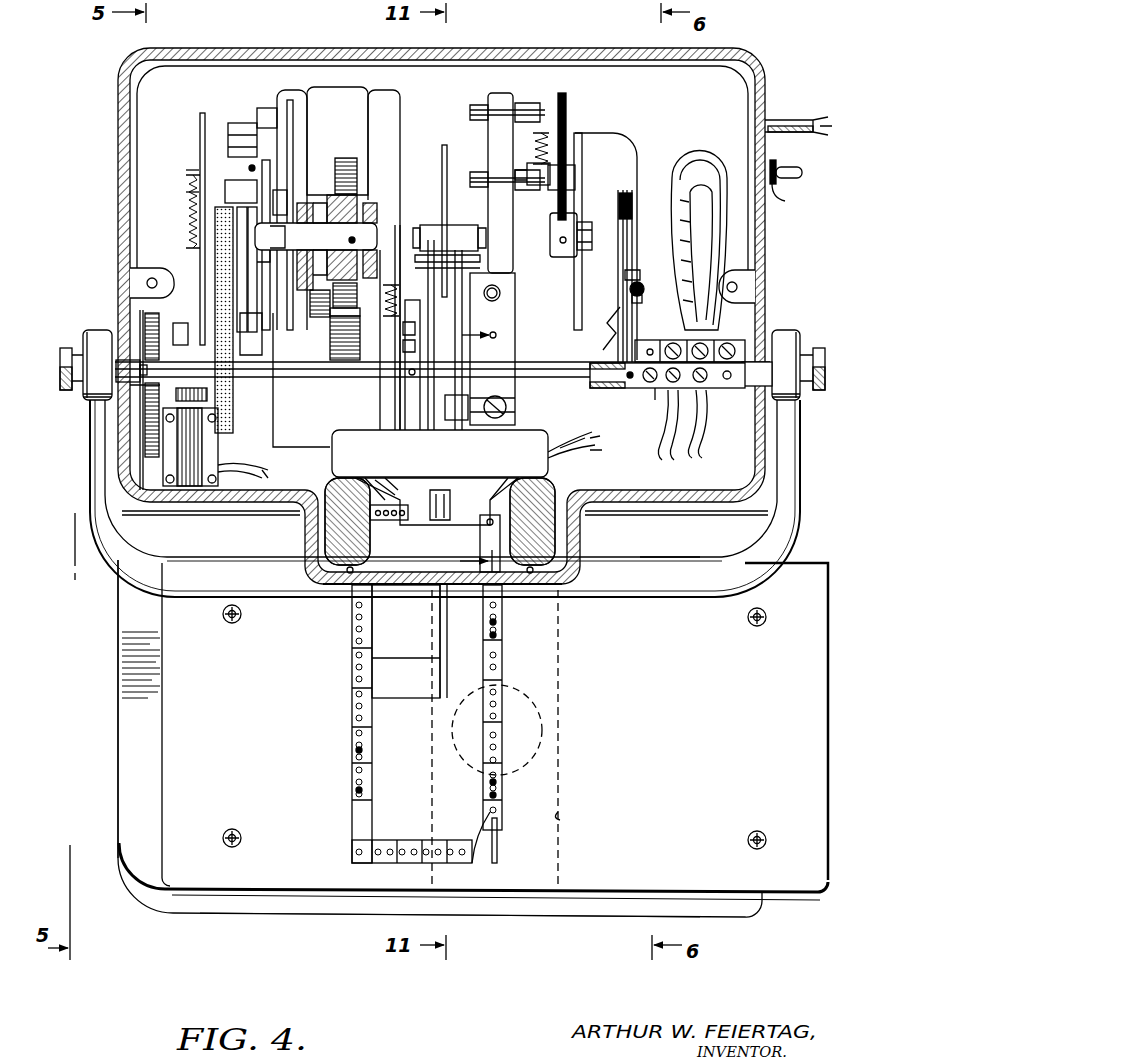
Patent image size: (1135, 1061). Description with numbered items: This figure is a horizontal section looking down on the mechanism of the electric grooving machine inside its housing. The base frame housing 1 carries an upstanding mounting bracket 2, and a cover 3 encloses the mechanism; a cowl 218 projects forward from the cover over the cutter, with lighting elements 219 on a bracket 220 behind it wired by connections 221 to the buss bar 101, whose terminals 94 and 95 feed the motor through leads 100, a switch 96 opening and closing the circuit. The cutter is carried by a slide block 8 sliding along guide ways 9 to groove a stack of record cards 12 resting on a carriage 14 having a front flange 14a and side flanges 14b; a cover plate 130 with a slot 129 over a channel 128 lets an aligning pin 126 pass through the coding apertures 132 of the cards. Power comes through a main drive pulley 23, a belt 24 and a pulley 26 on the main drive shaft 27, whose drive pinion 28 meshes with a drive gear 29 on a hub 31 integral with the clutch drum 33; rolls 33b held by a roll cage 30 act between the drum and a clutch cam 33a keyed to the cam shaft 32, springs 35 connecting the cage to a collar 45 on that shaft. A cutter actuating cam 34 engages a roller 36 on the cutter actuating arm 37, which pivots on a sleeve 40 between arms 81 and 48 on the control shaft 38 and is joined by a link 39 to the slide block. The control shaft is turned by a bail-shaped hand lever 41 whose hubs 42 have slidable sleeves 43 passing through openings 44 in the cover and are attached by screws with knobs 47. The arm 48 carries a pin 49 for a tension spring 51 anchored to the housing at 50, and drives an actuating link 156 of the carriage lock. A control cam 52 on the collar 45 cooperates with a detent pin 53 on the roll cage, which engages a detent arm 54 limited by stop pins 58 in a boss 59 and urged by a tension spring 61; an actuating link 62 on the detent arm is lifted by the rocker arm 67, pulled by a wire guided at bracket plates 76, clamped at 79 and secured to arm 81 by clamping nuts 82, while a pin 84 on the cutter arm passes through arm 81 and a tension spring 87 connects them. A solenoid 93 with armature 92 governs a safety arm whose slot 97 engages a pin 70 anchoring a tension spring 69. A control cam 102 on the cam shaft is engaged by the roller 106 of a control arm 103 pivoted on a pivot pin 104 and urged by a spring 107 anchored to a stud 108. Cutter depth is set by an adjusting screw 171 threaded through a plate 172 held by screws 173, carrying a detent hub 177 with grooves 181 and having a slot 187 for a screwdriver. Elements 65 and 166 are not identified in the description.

The base frame housing 1 is at (118, 668).
The mounting bracket 2 is at (500, 95).
The cover 3 is at (118, 162).
The slide block 8 is at (470, 492).
The guide ways 9 is at (392, 482).
The record cards 12 is at (350, 818).
The carriage 14 is at (205, 890).
The front flange 14a is at (296, 900).
The side flanges 14b is at (160, 802).
The main drive pulley 23 is at (215, 222).
The belt 24 is at (262, 255).
The pulley 26 is at (215, 305).
The main drive shaft 27 is at (330, 335).
The drive pinion 28 is at (345, 376).
The drive gear 29 is at (340, 158).
The roll cage 30 is at (275, 195).
The hub 31 is at (350, 206).
The cam shaft 32 is at (316, 236).
The clutch drum 33 is at (305, 203).
The clutch cam 33a is at (322, 203).
The rolls 33b is at (333, 300).
The cutter actuating cam 34 is at (442, 163).
The springs 35 is at (290, 239).
The roller 36 is at (437, 226).
The cutter actuating arm 37 is at (462, 262).
The control shaft 38 is at (248, 368).
The link 39 is at (432, 520).
The sleeve 40 is at (605, 372).
The hand lever 41 is at (660, 598).
The hubs 42 is at (95, 330).
The slidable sleeves 43 is at (110, 376).
The openings 44 is at (724, 400).
The collar 45 is at (275, 268).
The knobs 47 is at (65, 348).
The arm 48 is at (618, 297).
The pin 49 is at (632, 270).
The anchor 50 is at (640, 302).
The tension spring 51 is at (644, 286).
The control cam 52 is at (237, 240).
The detent pin 53 is at (262, 262).
The detent arm 54 is at (270, 165).
The stop pins 58 is at (257, 110).
The boss 59 is at (277, 94).
The tension spring 61 is at (250, 168).
The actuating link 62 is at (241, 191).
The spring end 65 is at (195, 192).
The actuating rocker arm 67 is at (310, 288).
The tension spring 69 is at (190, 205).
The pin 70 is at (190, 178).
The bracket plates 76 is at (403, 338).
The clamping means 79 is at (258, 295).
The arm 81 is at (418, 358).
The clamping nuts 82 is at (400, 260).
The pin 84 is at (403, 328).
The tension spring 87 is at (400, 306).
The armature 92 is at (208, 392).
The solenoid 93 is at (200, 450).
The terminal 94 is at (668, 343).
The terminal 95 is at (704, 343).
The switch 96 is at (798, 166).
The slot 97 is at (200, 122).
The leads 100 is at (703, 252).
The buss bar 101 is at (660, 393).
The control cam 102 is at (574, 322).
The control arm 103 is at (566, 160).
The pivot pin 104 is at (567, 112).
The cam engaging roller 106 is at (588, 222).
The spring 107 is at (548, 147).
The stud 108 is at (538, 186).
The aligning pin 126 is at (497, 732).
The channel 128 is at (562, 817).
The slot 129 is at (498, 840).
The cover plate 130 is at (495, 724).
The coding apertures 132 is at (356, 790).
The actuating link 156 is at (608, 338).
The plate 166 is at (679, 554).
The adjusting screw 171 is at (507, 398).
The plate 172 is at (510, 313).
The screws 173 is at (503, 293).
The detent hub 177 is at (507, 411).
The grooves 181 is at (446, 407).
The slot 187 is at (497, 396).
The cowl 218 is at (318, 572).
The lighting elements 219 is at (325, 530).
The bracket 220 is at (348, 430).
The connections 221 is at (560, 452).